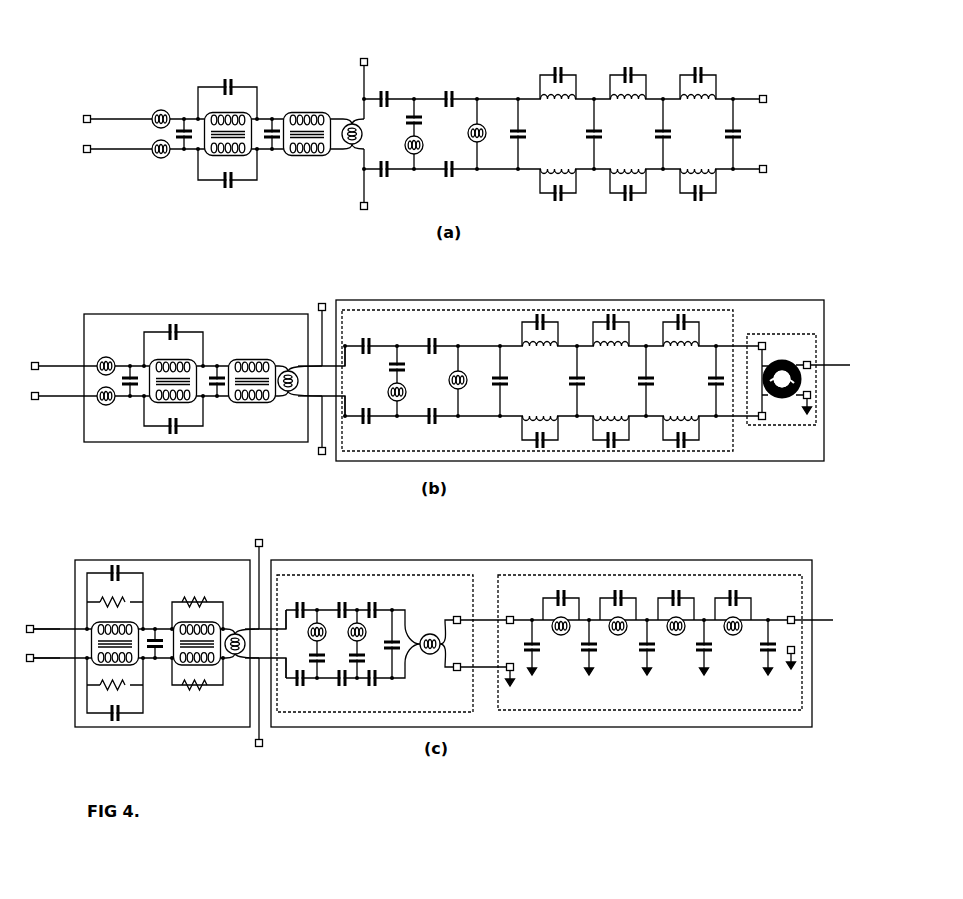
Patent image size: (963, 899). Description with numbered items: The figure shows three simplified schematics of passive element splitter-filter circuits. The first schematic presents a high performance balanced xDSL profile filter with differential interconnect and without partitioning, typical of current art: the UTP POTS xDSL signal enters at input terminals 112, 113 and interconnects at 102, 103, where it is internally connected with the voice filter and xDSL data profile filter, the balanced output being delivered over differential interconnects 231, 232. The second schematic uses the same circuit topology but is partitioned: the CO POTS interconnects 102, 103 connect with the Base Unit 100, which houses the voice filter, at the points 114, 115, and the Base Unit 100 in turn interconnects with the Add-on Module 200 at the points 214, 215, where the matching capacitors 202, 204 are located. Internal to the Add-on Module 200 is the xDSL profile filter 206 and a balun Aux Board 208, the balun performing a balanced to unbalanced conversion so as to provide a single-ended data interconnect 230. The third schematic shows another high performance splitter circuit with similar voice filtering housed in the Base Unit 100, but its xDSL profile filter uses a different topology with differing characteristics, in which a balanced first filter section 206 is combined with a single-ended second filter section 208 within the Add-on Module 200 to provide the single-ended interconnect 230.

The Base Unit 100 is at (177, 314).
The UTP POTS xDSL signal interconnect 102 is at (372, 60).
The UTP POTS xDSL signal interconnect 103 is at (372, 206).
The input terminal 112 is at (110, 119).
The input terminal 113 is at (110, 149).
The Base Unit interconnect 114 is at (307, 366).
The Base Unit interconnect 115 is at (307, 396).
The Add-on Module 200 is at (575, 299).
The matching capacitor 202 is at (370, 419).
The matching capacitor 204 is at (370, 344).
The xDSL profile filter 206 is at (733, 323).
The Aux Board 208 is at (803, 427).
The Add-on Module interconnect 214 is at (347, 346).
The Add-on Module interconnect 215 is at (347, 417).
The single-ended data interconnect 230 is at (828, 360).
The differential interconnect 231 is at (770, 97).
The differential interconnect 232 is at (770, 172).